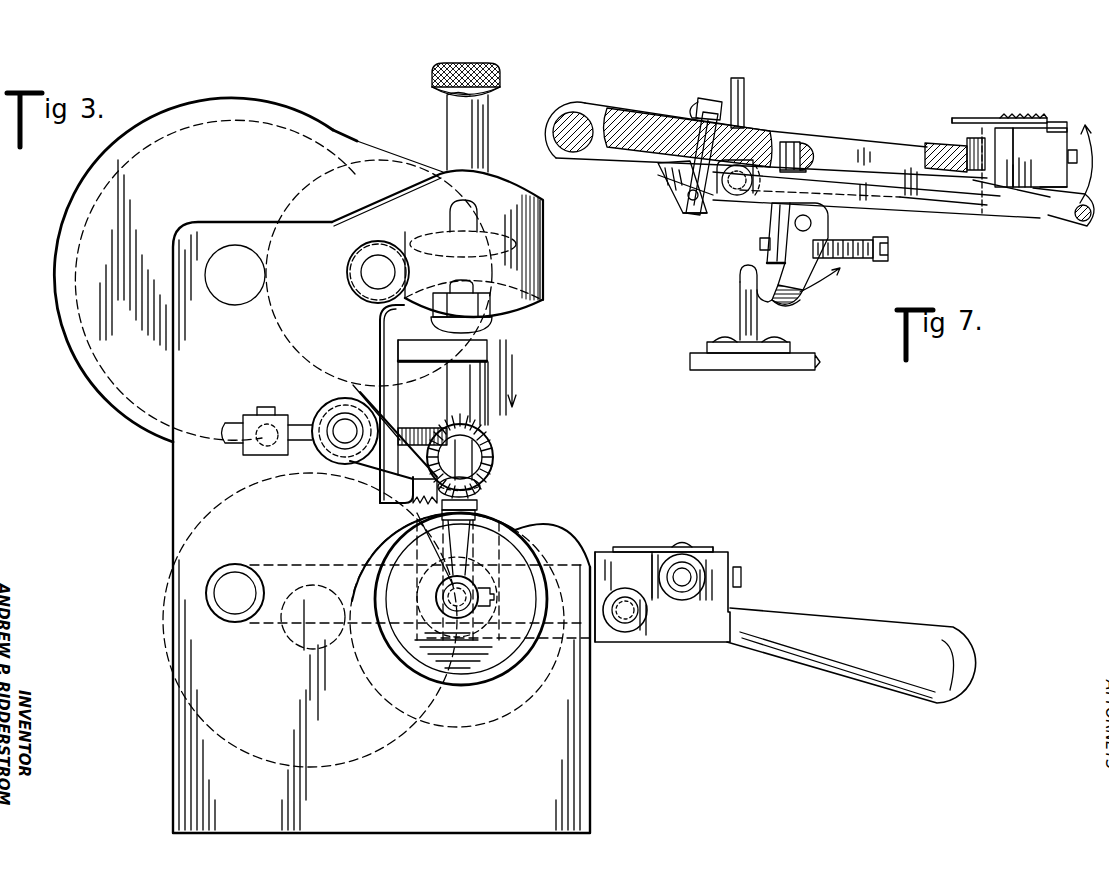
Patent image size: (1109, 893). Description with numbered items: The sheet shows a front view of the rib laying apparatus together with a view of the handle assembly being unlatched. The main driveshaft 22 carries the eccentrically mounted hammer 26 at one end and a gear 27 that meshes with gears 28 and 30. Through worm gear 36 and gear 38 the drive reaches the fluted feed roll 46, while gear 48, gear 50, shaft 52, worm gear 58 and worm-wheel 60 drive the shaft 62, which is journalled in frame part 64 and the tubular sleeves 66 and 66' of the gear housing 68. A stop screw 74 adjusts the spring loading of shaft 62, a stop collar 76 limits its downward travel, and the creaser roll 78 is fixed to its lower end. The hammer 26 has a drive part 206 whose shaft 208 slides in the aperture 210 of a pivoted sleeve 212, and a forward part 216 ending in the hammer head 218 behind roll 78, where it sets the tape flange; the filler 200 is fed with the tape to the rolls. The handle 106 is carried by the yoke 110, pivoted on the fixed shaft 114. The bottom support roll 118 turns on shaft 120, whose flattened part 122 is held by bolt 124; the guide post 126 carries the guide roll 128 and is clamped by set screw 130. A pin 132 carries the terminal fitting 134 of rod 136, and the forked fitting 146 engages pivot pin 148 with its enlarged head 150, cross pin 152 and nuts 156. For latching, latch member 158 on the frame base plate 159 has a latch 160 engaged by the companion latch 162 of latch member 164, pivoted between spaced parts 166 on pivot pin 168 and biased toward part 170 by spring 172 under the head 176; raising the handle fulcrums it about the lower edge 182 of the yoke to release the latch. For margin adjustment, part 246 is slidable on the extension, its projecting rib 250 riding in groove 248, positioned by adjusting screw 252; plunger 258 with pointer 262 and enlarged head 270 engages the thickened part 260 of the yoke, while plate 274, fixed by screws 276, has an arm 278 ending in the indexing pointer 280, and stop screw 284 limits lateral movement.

In FIG. 3, the main driveshaft 22 is at (343, 420).
In FIG. 3, the hammer 26 is at (300, 425).
In FIG. 3, the gear 27 is at (392, 392).
In FIG. 3, the gear 28 is at (205, 500).
In FIG. 3, the gear 30 is at (138, 410).
In FIG. 3, the worm gear 36 is at (312, 660).
In FIG. 3, the gear 38 is at (497, 725).
In FIG. 3, the feed roll 46 is at (494, 447).
In FIG. 3, the gear 48 is at (222, 302).
In FIG. 3, the gear 50 is at (292, 192).
In FIG. 3, the shaft 52 is at (368, 280).
In FIG. 3, the worm gear 58 is at (346, 262).
In FIG. 3, the worm-wheel 60 is at (545, 244).
In FIG. 3, the shaft 62 is at (466, 450).
In FIG. 3, the frame part 64 is at (482, 418).
In FIG. 3, the tubular sleeve 66 is at (444, 133).
In FIG. 3, the tubular sleeve 66' is at (515, 298).
In FIG. 3, the gear housing 68 is at (554, 220).
In FIG. 3, the stop screw 74 is at (488, 118).
In FIG. 3, the stop collar 76 is at (498, 327).
In FIG. 3, the creaser roll 78 is at (482, 474).
In FIG. 3, the handle 106 is at (815, 610).
In FIG. 7, the handle 106 is at (1082, 232).
In FIG. 7, the yoke 110 is at (630, 106).
In FIG. 3, the fixed shaft 114 is at (240, 580).
In FIG. 7, the fixed shaft 114 is at (573, 112).
In FIG. 3, the bottom support roll 118 is at (500, 677).
In FIG. 3, the shaft 120 is at (428, 588).
In FIG. 7, the flattened part 122 is at (810, 165).
In FIG. 7, the bolt 124 is at (812, 148).
In FIG. 3, the guide post 126 is at (478, 508).
In FIG. 3, the guide roll 128 is at (480, 494).
In FIG. 3, the set screw 130 is at (496, 596).
In FIG. 7, the pin 132 is at (755, 203).
In FIG. 7, the terminal fitting 134 is at (728, 196).
In FIG. 7, the rod 136 is at (746, 95).
In FIG. 7, the forked fitting 146 is at (660, 180).
In FIG. 7, the pivot pin 148 is at (708, 98).
In FIG. 7, the enlarged head 150 is at (698, 215).
In FIG. 7, the cross pin 152 is at (687, 196).
In FIG. 7, the nuts 156 is at (695, 102).
In FIG. 7, the latch member 158 is at (740, 318).
In FIG. 7, the frame base plate 159 is at (800, 355).
In FIG. 7, the latch 160 is at (743, 282).
In FIG. 7, the companion latch 162 is at (788, 310).
In FIG. 7, the latch member 164 is at (800, 297).
In FIG. 7, the spaced parts 166 is at (830, 224).
In FIG. 7, the pivot pin 168 is at (830, 258).
In FIG. 7, the part 170 is at (772, 232).
In FIG. 7, the companion spring 172 is at (835, 272).
In FIG. 7, the head 176 is at (886, 262).
In FIG. 7, the lower edge 182 is at (790, 140).
In FIG. 3, the filler 200 is at (508, 352).
In FIG. 3, the drive part 206 is at (345, 420).
In FIG. 3, the shaft 208 is at (230, 423).
In FIG. 3, the aperture 210 is at (263, 420).
In FIG. 3, the sleeve 212 is at (256, 450).
In FIG. 3, the forward part 216 is at (400, 435).
In FIG. 3, the hammer head 218 is at (412, 486).
In FIG. 3, the part 246 is at (735, 553).
In FIG. 7, the part 246 is at (995, 193).
In FIG. 7, the groove 248 is at (1030, 200).
In FIG. 7, the projecting rib 250 is at (1018, 190).
In FIG. 3, the adjusting screw 252 is at (684, 600).
In FIG. 7, the plunger 258 is at (985, 127).
In FIG. 3, the thickened part 260 is at (595, 555).
In FIG. 7, the thickened part 260 is at (930, 145).
In FIG. 7, the pointer 262 is at (970, 142).
In FIG. 3, the enlarged head 270 is at (744, 575).
In FIG. 7, the enlarged head 270 is at (1073, 150).
In FIG. 3, the plate 274 is at (722, 545).
In FIG. 7, the plate 274 is at (1050, 120).
In FIG. 3, the screws 276 is at (686, 540).
In FIG. 7, the screws 276 is at (1025, 113).
In FIG. 3, the laterally projecting arm 278 is at (637, 545).
In FIG. 7, the laterally projecting arm 278 is at (960, 117).
In FIG. 3, the indexing pointer 280 is at (608, 548).
In FIG. 7, the indexing pointer 280 is at (952, 118).
In FIG. 3, the adjustable stop screw 284 is at (627, 630).